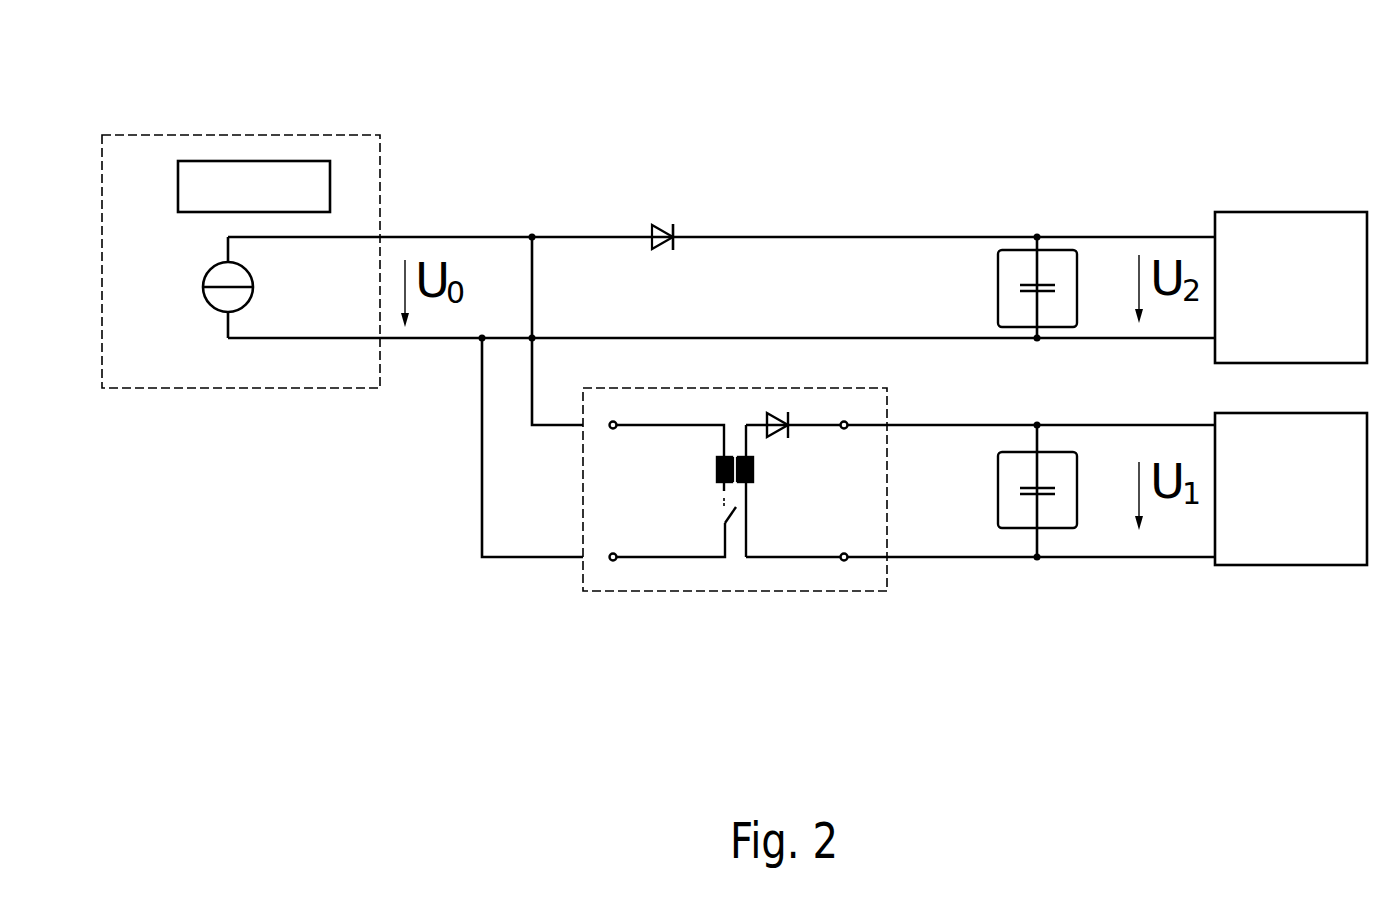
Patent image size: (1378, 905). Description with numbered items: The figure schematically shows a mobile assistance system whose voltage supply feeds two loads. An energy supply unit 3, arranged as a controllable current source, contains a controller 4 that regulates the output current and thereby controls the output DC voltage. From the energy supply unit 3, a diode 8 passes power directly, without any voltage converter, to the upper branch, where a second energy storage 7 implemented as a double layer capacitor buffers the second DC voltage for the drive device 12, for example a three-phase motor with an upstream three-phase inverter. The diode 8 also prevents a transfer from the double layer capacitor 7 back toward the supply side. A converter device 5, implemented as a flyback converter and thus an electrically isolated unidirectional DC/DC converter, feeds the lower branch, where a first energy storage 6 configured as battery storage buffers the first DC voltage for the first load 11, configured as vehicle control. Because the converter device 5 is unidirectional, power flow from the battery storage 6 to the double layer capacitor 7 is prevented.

The energy supply unit 3 is at (384, 170).
The controller 4 is at (241, 207).
The converter device 5 is at (891, 579).
The first energy storage 6 is at (1059, 510).
The second energy storage 7 is at (1059, 272).
The diode 8 is at (665, 216).
The first load 11 is at (1270, 508).
The drive device 12 is at (1270, 309).